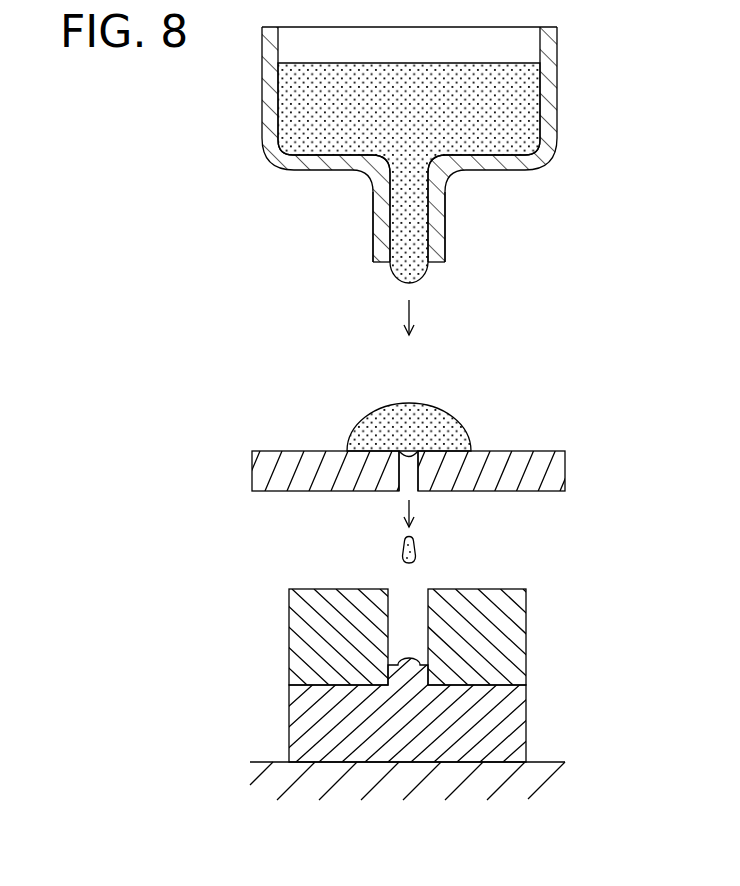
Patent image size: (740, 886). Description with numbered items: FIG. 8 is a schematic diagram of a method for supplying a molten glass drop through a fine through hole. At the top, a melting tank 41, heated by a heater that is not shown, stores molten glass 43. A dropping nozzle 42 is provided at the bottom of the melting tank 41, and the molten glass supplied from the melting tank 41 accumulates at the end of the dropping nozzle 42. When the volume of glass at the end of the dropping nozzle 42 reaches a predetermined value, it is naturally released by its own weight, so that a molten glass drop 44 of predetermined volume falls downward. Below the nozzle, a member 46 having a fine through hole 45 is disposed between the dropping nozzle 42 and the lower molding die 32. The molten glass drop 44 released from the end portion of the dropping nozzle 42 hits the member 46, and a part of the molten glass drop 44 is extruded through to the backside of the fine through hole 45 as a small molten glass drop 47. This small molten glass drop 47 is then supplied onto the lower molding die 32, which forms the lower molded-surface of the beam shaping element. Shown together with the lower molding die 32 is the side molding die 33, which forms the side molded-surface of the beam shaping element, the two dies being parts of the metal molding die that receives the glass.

The melting tank 41 is at (548, 78).
The dropping nozzle 42 is at (442, 228).
The molten glass 43 is at (303, 105).
The molten glass drop 44 is at (443, 420).
The fine through hole 45 is at (404, 492).
The member having a fine through hole 46 is at (273, 465).
The small molten glass drop 47 is at (417, 545).
The side molding die 33 is at (510, 627).
The lower molding die 32 is at (512, 720).